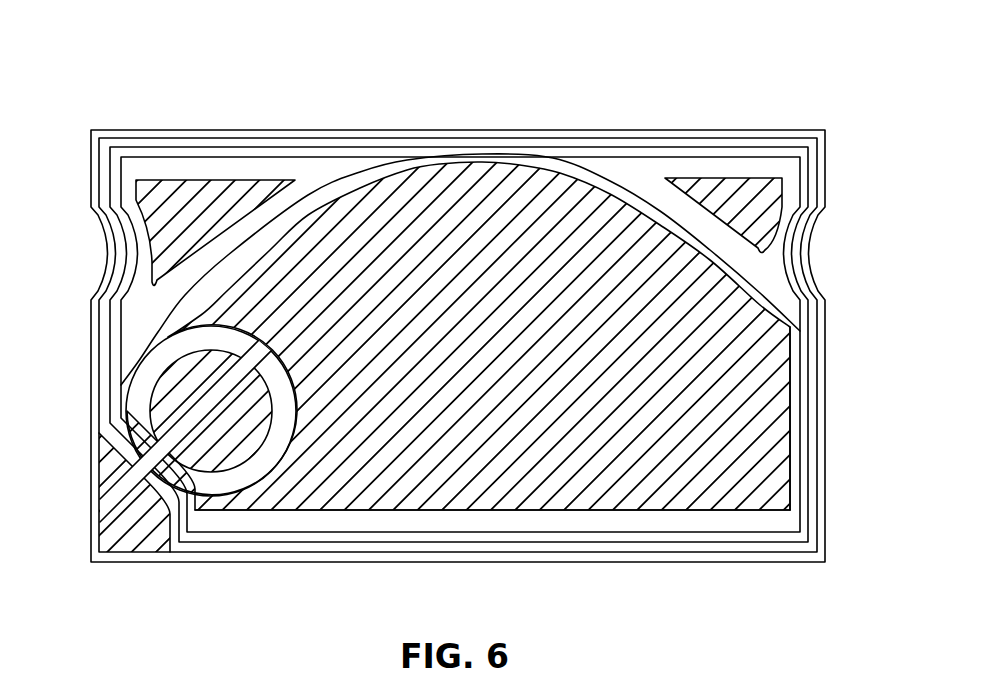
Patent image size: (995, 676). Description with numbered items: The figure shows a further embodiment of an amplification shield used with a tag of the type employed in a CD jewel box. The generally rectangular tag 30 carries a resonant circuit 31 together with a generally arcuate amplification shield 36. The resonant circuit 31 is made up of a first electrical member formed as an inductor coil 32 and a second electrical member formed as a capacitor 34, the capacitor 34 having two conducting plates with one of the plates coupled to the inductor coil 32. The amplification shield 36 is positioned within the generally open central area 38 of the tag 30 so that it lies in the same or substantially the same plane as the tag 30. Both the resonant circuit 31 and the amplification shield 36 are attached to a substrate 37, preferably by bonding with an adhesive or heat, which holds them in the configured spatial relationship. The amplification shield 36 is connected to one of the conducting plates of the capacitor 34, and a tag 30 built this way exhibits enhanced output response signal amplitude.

The tag 30 is at (487, 96).
The resonant circuit 31 is at (99, 404).
The inductor coil 32 is at (821, 343).
The capacitor 34 is at (226, 398).
The amplification shield 36 is at (790, 423).
The substrate 37 is at (789, 182).
The open central area 38 is at (503, 517).